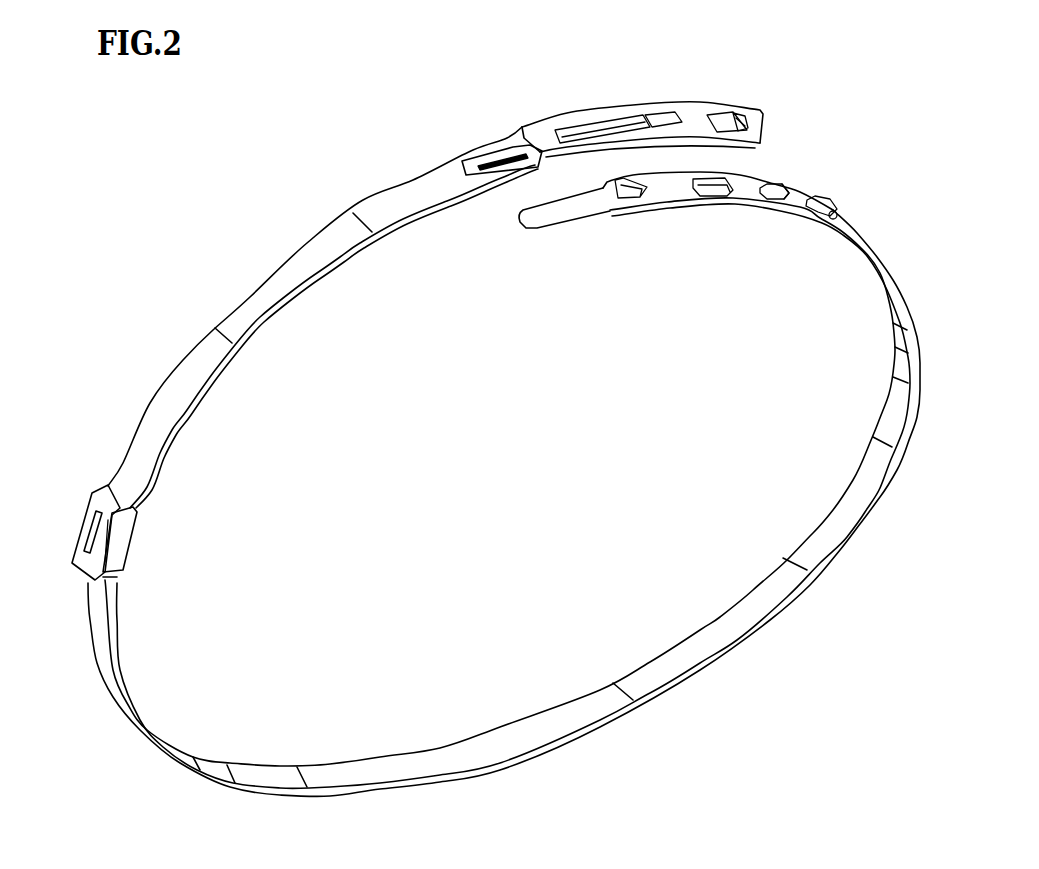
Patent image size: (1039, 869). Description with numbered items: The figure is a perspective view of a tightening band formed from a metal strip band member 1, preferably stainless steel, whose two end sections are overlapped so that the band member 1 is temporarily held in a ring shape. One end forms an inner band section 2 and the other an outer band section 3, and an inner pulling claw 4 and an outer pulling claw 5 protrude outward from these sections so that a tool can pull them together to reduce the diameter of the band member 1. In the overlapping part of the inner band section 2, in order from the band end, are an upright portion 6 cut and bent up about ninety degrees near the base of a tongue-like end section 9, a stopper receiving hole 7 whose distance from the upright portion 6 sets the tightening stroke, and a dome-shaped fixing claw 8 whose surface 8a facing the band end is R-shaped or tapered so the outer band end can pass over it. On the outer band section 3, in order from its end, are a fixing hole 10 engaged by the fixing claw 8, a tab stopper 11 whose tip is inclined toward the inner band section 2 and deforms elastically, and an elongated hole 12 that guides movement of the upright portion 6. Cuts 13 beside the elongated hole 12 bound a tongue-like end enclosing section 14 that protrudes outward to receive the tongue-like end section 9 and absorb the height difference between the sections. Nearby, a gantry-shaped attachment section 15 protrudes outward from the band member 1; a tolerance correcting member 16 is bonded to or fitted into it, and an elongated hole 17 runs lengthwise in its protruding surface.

The band member 1 is at (653, 678).
The inner band section 2 is at (683, 193).
The outer band section 3 is at (688, 115).
The inner pulling claw 4 is at (823, 196).
The outer pulling claw 5 is at (720, 117).
The upright portion 6 is at (620, 197).
The stopper receiving hole 7 is at (717, 192).
The fixing claw 8 is at (787, 192).
The surface 8a is at (768, 187).
The tongue-like end section 9 is at (555, 210).
The fixing hole 10 is at (743, 123).
The tab stopper 11 is at (660, 118).
The elongated hole 12 is at (600, 127).
The cuts 13 is at (493, 143).
The tongue-like end enclosing section 14 is at (522, 153).
The attachment section 15 is at (107, 543).
The tolerance correcting member 16 is at (125, 533).
The elongated hole 17 is at (90, 527).